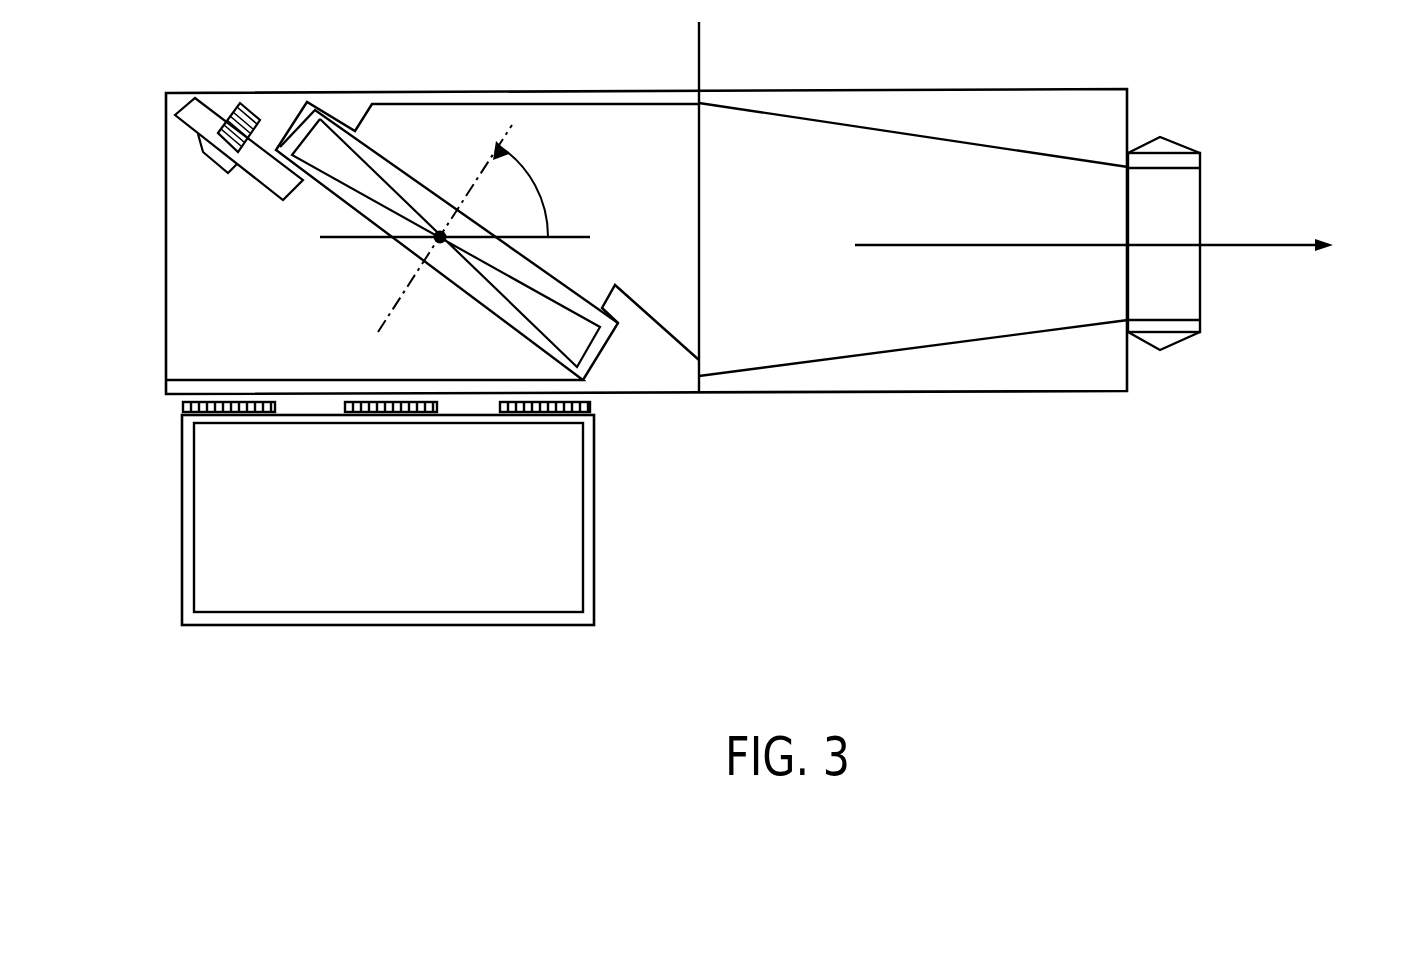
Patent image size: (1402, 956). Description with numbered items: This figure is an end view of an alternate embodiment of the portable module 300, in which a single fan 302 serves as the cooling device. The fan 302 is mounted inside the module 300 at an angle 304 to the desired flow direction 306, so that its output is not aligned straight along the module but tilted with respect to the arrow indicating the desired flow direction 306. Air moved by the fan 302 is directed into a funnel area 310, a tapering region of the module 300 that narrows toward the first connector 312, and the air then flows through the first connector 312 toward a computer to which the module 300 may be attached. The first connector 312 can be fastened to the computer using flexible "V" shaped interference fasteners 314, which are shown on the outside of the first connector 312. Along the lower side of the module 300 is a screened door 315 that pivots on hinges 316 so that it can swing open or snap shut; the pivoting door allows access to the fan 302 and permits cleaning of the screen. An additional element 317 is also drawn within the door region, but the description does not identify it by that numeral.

The portable module 300 is at (1092, 72).
The fan 302 is at (377, 170).
The angle 304 is at (538, 202).
The desired flow direction 306 is at (1120, 232).
The funnel area 310 is at (837, 328).
The first connector 312 is at (1203, 157).
The flexible "V" shaped interference fasteners 314 is at (1157, 117).
The screened door 315 is at (597, 518).
The hinges 316 is at (183, 405).
The circuit board 317 is at (375, 598).